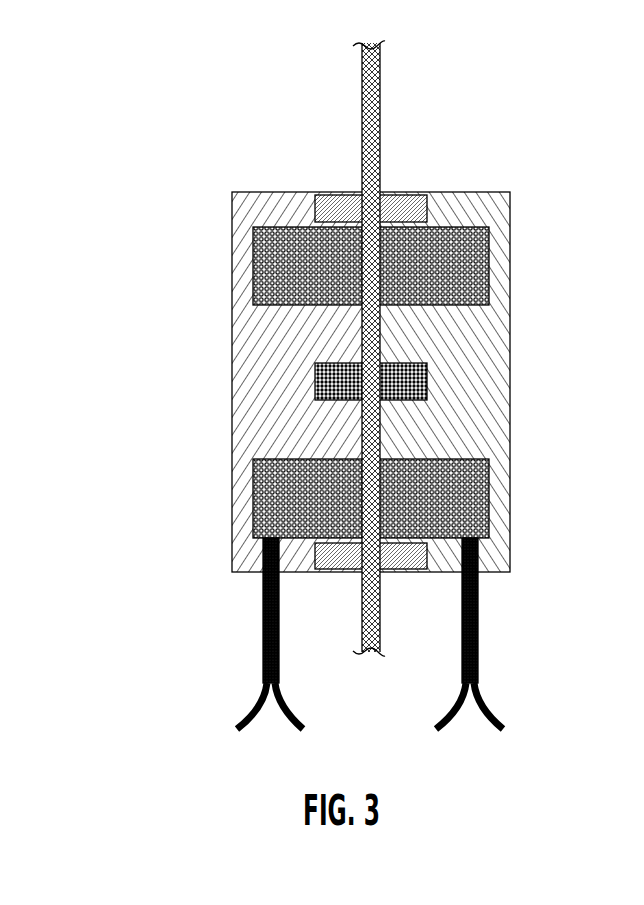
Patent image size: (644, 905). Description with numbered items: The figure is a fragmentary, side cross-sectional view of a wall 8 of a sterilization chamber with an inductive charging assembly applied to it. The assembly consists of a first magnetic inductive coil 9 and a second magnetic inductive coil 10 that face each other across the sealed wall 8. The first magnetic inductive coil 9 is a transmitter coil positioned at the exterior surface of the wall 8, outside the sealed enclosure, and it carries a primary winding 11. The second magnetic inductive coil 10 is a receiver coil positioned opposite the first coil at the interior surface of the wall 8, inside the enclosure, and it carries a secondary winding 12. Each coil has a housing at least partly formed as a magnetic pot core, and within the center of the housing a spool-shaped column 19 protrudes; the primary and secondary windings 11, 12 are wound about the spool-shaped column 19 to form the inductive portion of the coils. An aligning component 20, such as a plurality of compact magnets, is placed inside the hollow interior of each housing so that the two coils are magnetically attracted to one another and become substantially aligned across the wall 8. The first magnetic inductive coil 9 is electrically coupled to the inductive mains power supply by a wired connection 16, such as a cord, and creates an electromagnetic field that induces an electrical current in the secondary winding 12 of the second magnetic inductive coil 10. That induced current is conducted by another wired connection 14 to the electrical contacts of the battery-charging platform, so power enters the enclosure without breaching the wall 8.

The first magnetic inductive coil 9 is at (377, 388).
The wall 8 is at (389, 613).
The second magnetic inductive coil 10 is at (377, 383).
The primary winding 11 is at (269, 262).
The secondary winding 12 is at (473, 264).
The wired connection 14 is at (498, 703).
The wired connection 16 is at (249, 698).
The spool-shaped column 19 is at (257, 391).
The aligning component 20 is at (341, 194).